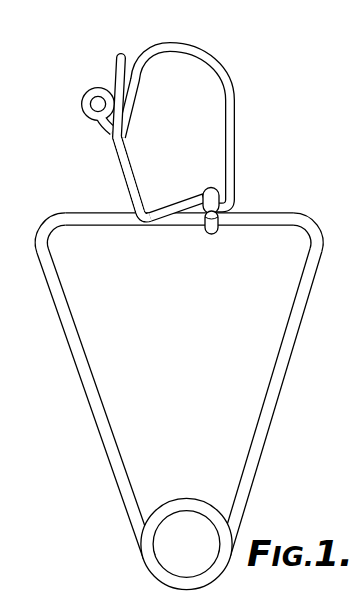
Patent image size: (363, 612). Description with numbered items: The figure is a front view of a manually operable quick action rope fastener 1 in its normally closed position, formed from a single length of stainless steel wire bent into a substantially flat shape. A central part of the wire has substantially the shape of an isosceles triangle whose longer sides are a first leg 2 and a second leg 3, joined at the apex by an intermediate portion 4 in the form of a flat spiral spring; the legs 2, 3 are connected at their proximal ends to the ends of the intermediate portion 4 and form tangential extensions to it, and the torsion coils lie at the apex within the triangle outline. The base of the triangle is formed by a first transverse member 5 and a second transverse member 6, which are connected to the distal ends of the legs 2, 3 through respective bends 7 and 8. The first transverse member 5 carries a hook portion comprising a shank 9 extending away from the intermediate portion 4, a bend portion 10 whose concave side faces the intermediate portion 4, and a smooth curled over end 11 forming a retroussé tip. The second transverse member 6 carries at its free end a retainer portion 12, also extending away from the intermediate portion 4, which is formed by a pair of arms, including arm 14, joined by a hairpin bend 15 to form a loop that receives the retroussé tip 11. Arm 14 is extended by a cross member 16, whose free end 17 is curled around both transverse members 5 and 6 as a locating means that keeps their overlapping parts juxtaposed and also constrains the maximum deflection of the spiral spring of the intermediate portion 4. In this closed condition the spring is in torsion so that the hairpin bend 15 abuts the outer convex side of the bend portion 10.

The rope fastener 1 is at (283, 394).
The first leg 2 is at (68, 325).
The second leg 3 is at (291, 330).
The intermediate portion 4 is at (186, 498).
The first transverse member 5 is at (77, 213).
The second transverse member 6 is at (262, 212).
The bend 7 is at (44, 226).
The bend 8 is at (311, 217).
The shank 9 is at (237, 107).
The bend portion 10 is at (216, 60).
The curled over end 11 is at (81, 103).
The retainer portion 12 is at (126, 138).
The arm 14 is at (130, 166).
The hairpin bend 15 is at (116, 57).
The cross member 16 is at (182, 212).
The free end 17 is at (213, 233).